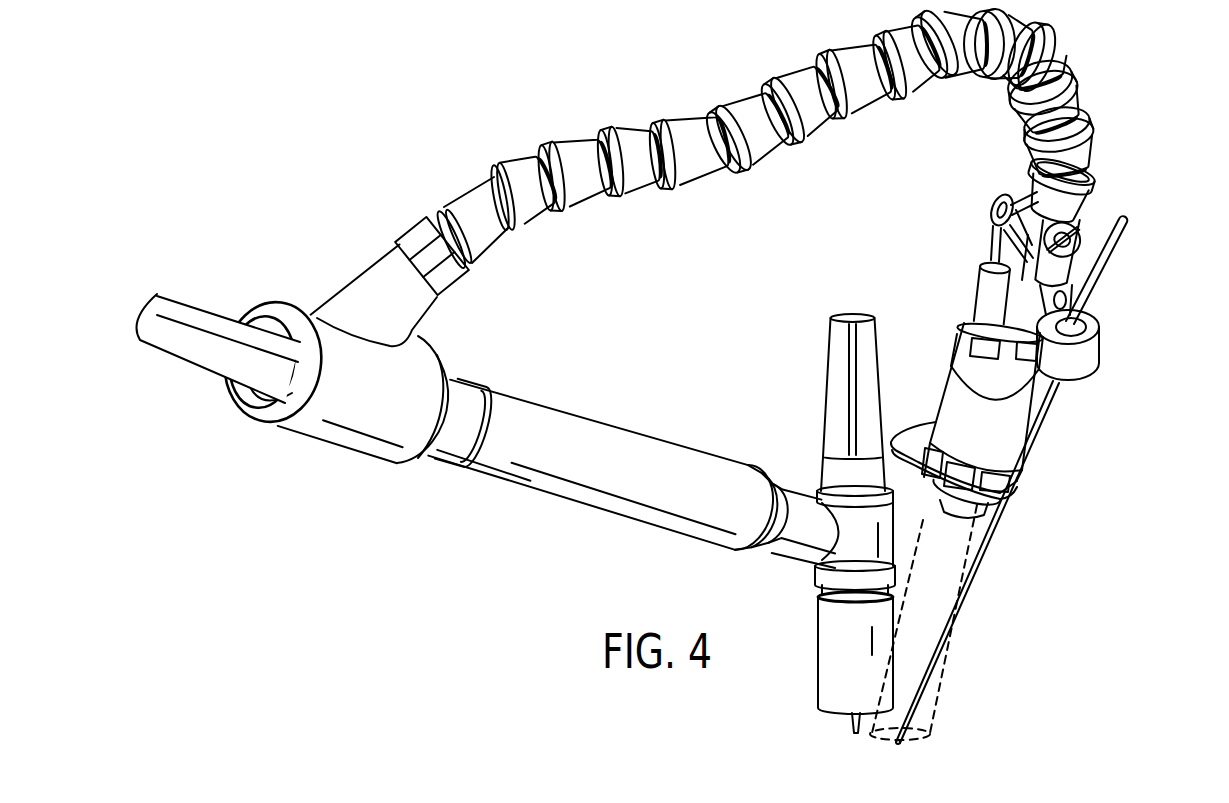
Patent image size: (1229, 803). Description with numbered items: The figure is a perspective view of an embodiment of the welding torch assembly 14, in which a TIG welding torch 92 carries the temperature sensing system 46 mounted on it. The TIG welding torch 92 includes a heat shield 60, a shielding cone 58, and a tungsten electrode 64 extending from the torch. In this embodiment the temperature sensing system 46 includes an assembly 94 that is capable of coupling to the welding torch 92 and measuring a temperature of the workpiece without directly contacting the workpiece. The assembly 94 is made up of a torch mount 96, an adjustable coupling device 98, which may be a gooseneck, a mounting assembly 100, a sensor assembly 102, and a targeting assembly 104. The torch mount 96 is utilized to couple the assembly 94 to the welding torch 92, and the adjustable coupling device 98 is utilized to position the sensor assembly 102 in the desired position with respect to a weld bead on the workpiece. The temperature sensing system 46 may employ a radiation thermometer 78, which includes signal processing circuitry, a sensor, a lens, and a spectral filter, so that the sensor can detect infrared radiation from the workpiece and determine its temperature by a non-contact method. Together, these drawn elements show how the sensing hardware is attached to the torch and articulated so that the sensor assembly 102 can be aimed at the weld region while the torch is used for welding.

The welding torch assembly 14 is at (444, 168).
The assembly 94 is at (793, 118).
The adjustable coupling device 98 is at (728, 110).
The mounting assembly 100 is at (1105, 214).
The targeting assembly 104 is at (1108, 343).
The sensor assembly 102 is at (1003, 444).
The radiation thermometer 78 is at (922, 408).
The temperature sensing system 46 is at (1042, 477).
The torch mount 96 is at (313, 308).
The TIG welding torch 92 is at (708, 442).
The heat shield 60 is at (818, 570).
The shielding cone 58 is at (829, 662).
The tungsten electrode 64 is at (858, 727).